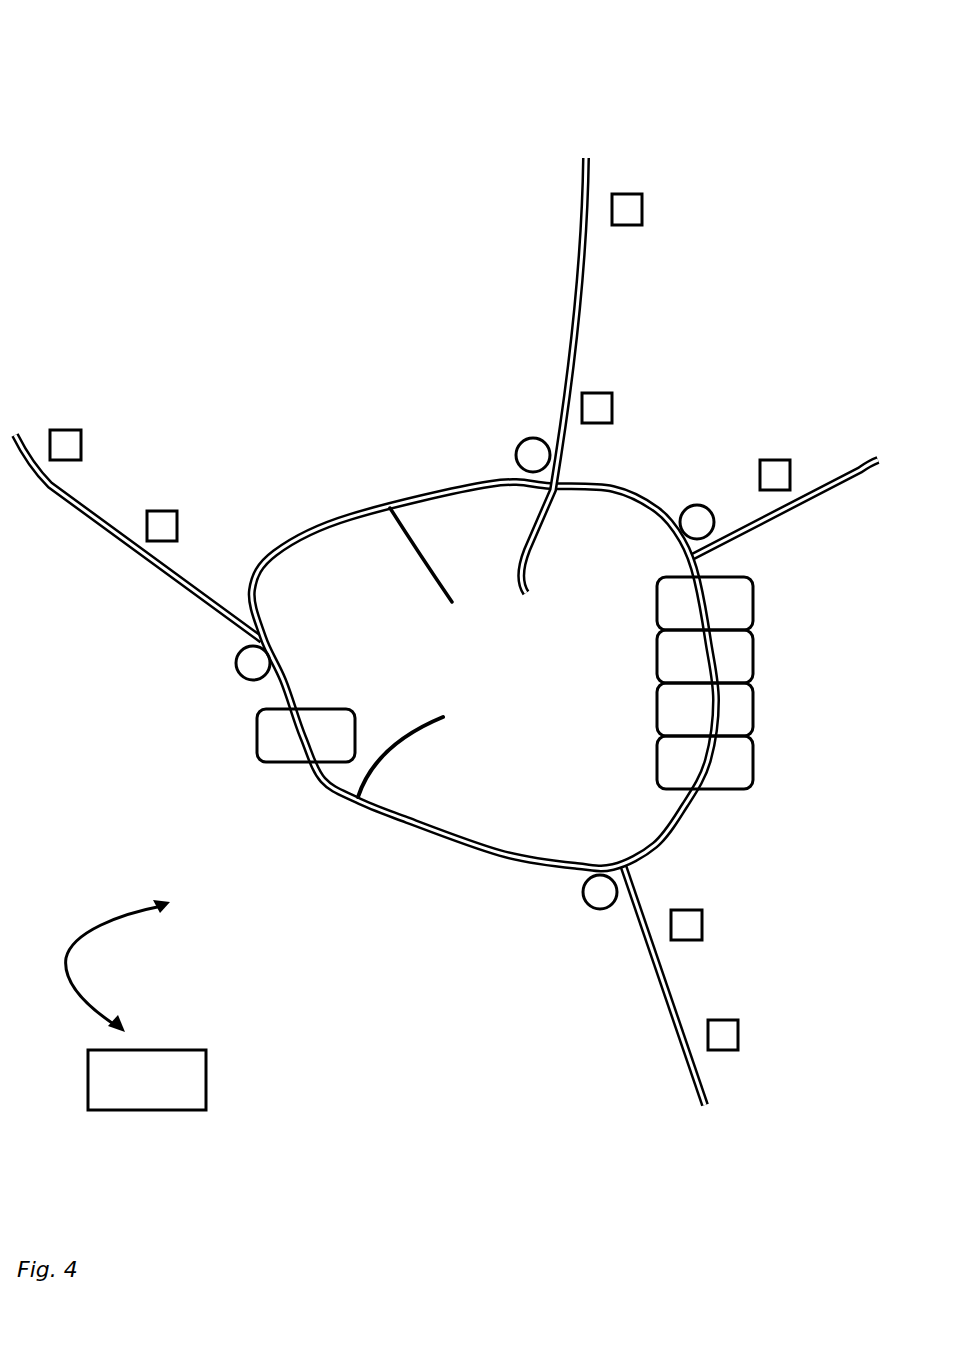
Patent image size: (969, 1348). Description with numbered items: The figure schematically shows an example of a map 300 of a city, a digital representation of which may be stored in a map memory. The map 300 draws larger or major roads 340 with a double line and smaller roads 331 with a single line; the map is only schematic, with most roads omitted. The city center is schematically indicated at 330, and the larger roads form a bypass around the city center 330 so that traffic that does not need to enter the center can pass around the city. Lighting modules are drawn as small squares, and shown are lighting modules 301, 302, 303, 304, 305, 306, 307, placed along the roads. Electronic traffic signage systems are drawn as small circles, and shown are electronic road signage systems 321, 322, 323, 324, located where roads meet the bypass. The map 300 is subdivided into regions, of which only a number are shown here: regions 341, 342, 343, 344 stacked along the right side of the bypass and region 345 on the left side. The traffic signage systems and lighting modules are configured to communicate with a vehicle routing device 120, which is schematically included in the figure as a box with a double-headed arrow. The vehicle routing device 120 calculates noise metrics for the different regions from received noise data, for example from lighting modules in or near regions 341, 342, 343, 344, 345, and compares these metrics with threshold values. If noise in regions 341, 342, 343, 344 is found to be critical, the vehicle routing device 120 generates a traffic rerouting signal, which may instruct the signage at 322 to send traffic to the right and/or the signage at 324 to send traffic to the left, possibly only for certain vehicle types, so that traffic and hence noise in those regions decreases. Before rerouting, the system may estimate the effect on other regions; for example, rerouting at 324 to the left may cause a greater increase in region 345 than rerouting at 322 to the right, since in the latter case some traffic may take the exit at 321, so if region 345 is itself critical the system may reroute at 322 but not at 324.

The map 300 is at (79, 31).
The vehicle routing device 120 is at (136, 1005).
The lighting module 301 is at (60, 436).
The lighting module 302 is at (155, 518).
The lighting module 303 is at (693, 922).
The lighting module 304 is at (730, 1033).
The lighting module 305 is at (633, 209).
The lighting module 306 is at (613, 407).
The lighting module 307 is at (770, 467).
The electronic road signage system 321 is at (245, 663).
The electronic road signage system 322 is at (525, 457).
The electronic road signage system 323 is at (695, 517).
The electronic road signage system 324 is at (592, 892).
The city center 330 is at (484, 675).
The smaller road 331 is at (385, 768).
The major road 340 is at (570, 290).
The region 341 is at (730, 613).
The region 342 is at (730, 665).
The region 343 is at (730, 717).
The region 344 is at (730, 769).
The region 345 is at (278, 745).